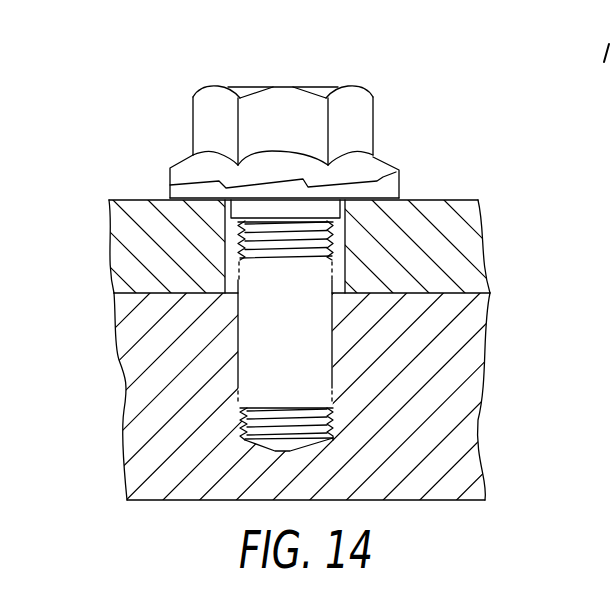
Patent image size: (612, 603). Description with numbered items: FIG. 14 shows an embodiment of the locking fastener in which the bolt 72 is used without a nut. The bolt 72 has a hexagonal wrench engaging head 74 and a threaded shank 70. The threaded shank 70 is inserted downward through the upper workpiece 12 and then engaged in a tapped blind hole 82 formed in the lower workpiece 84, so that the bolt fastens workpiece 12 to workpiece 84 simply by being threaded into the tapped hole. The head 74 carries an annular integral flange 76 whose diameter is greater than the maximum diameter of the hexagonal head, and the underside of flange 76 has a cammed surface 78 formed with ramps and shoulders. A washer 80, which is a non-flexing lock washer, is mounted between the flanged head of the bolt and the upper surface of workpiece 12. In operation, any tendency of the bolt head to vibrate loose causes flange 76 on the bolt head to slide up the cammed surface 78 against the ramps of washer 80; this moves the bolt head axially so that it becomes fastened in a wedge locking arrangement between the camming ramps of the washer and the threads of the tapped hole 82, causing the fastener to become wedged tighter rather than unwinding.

The workpiece 12 is at (472, 252).
The threaded shank 70 is at (333, 383).
The bolt 72 is at (373, 92).
The hexagonal wrench engaging head 74 is at (193, 95).
The annular integral flange 76 is at (386, 163).
The cammed surface 78 is at (401, 170).
The washer 80 is at (170, 193).
The tapped blind hole 82 is at (235, 354).
The workpiece 84 is at (128, 483).